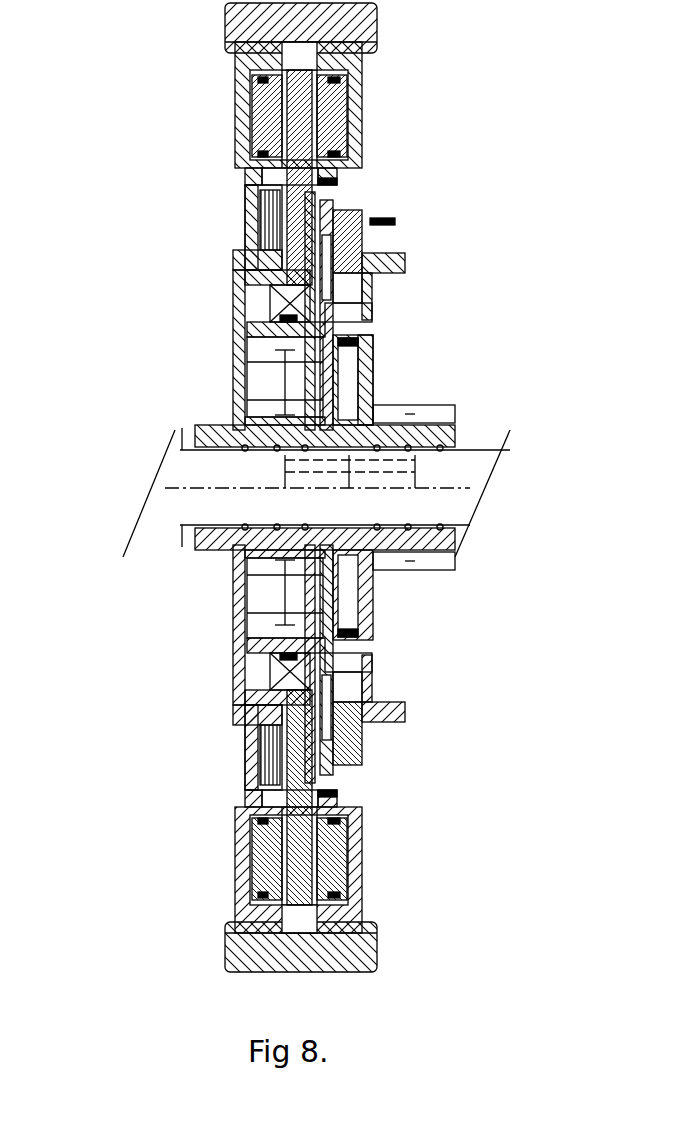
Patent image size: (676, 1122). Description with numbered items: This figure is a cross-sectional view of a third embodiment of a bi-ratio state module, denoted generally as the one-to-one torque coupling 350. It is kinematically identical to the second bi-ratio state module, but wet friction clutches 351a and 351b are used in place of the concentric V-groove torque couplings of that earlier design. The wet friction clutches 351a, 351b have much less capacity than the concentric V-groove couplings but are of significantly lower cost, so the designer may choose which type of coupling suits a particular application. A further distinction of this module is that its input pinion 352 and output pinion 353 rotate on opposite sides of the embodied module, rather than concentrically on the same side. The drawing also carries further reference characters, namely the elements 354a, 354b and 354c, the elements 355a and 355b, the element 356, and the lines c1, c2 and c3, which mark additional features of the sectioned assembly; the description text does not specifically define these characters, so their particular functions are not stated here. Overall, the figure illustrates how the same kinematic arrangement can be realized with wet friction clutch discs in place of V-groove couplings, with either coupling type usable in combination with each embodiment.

The one-to-one torque coupling 350 is at (306, 487).
The wet friction clutch 351a is at (240, 108).
The wet friction clutch 351b is at (258, 200).
The input pinion 352 is at (197, 430).
The output pinion 353 is at (455, 417).
The inner ring 354a is at (333, 206).
The armature block 354b is at (362, 242).
The seal ring 354c is at (397, 220).
The outer housing 355a is at (373, 350).
The inner slot 355b is at (373, 380).
The retaining ring 356 is at (373, 397).
The central axis c1 is at (437, 488).
The first axis line c2 is at (415, 458).
The second axis line c3 is at (415, 472).